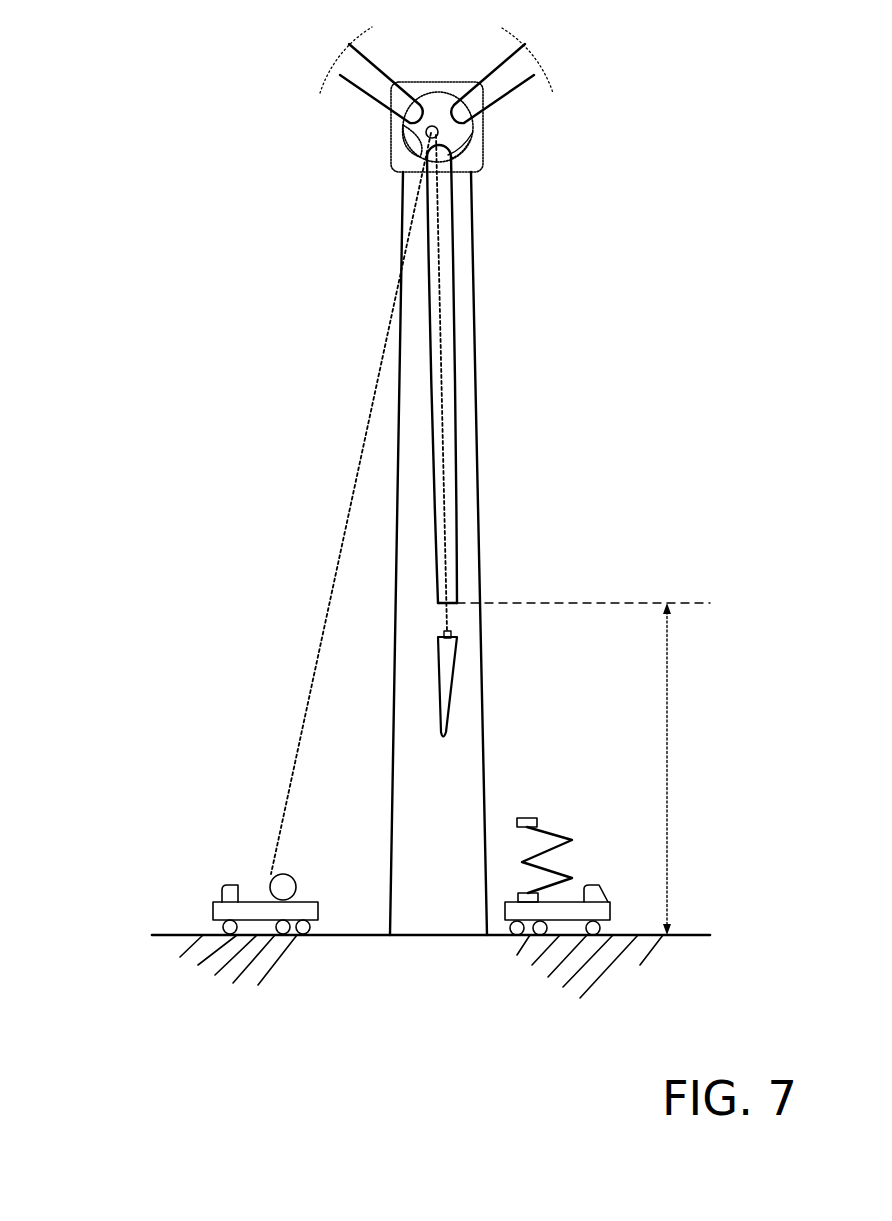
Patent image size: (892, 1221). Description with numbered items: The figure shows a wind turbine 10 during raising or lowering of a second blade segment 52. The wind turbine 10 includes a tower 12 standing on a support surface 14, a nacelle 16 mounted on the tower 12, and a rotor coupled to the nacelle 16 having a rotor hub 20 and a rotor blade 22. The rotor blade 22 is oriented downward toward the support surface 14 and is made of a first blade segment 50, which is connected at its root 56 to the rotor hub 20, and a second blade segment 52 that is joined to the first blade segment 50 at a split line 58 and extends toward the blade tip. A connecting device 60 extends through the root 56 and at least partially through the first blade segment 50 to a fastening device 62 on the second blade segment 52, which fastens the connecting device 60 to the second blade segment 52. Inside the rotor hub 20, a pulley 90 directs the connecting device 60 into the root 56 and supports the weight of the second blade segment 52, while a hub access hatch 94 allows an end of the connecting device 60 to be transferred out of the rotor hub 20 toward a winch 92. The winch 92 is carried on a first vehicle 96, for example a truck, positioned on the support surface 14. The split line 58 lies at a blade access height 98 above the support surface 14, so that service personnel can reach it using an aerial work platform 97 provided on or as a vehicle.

The wind turbine 10 is at (233, 105).
The tower 12 is at (476, 392).
The support surface 14 is at (167, 935).
The nacelle 16 is at (398, 172).
The rotor hub 20 is at (467, 143).
The rotor blade 22 is at (488, 643).
The first blade segment 50 is at (454, 296).
The second blade segment 52 is at (452, 725).
The root 56 is at (470, 142).
The split line 58 is at (458, 605).
The connecting device 60 is at (447, 537).
The fastening device 62 is at (444, 634).
The pulley 90 is at (425, 131).
The winch 92 is at (290, 879).
The hub access hatch 94 is at (402, 152).
The first vehicle 96 is at (252, 903).
The aerial work platform 97 is at (590, 885).
The blade access height 98 is at (668, 757).